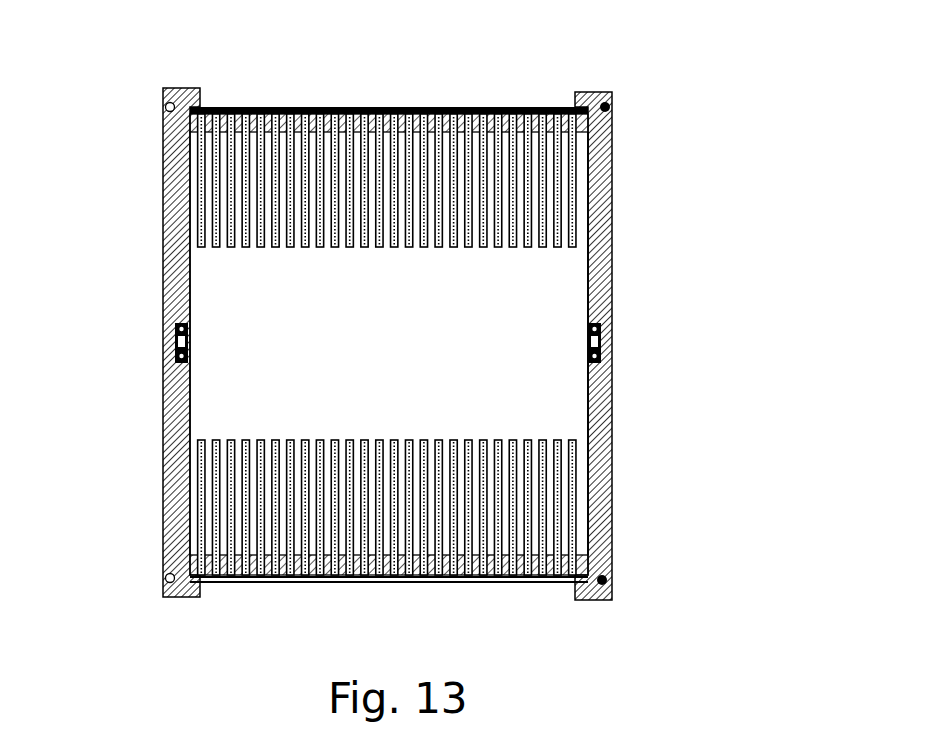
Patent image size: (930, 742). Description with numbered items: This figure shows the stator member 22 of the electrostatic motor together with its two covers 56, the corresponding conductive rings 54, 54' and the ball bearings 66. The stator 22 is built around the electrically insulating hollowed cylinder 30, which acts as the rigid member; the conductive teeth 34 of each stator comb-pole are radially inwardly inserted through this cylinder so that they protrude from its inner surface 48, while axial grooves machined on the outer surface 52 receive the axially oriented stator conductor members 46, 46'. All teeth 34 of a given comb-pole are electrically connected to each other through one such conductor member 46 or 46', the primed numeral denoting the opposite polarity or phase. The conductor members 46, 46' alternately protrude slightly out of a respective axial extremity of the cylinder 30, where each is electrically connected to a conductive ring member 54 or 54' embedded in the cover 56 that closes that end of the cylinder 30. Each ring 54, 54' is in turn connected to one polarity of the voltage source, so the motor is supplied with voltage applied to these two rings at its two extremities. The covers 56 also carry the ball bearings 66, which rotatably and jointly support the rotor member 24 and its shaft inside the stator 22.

The stator member 22 is at (613, 100).
The rotor member 24 is at (592, 248).
The hollowed cylinder 30 is at (163, 128).
The teeth 34 is at (528, 440).
The stator conductor member 46 is at (389, 74).
The stator conductor member 46' is at (389, 594).
The inner surface 48 is at (428, 392).
The outer surface 52 is at (577, 600).
The conductive ring member 54 is at (677, 163).
The conductive ring member 54' is at (107, 366).
The cover 56 is at (188, 418).
The ball bearing 66 is at (190, 328).